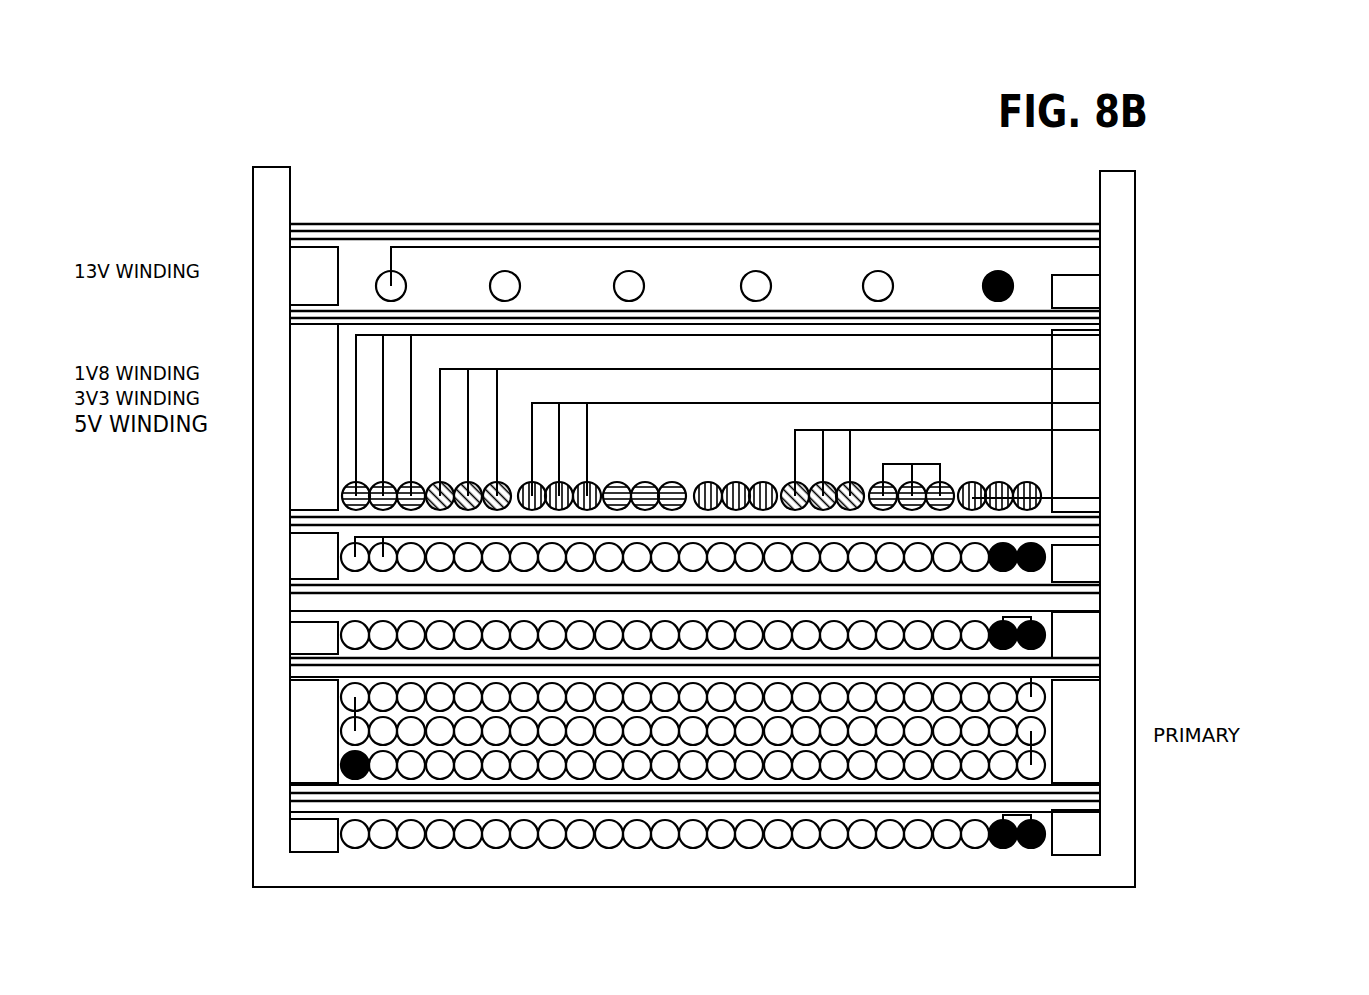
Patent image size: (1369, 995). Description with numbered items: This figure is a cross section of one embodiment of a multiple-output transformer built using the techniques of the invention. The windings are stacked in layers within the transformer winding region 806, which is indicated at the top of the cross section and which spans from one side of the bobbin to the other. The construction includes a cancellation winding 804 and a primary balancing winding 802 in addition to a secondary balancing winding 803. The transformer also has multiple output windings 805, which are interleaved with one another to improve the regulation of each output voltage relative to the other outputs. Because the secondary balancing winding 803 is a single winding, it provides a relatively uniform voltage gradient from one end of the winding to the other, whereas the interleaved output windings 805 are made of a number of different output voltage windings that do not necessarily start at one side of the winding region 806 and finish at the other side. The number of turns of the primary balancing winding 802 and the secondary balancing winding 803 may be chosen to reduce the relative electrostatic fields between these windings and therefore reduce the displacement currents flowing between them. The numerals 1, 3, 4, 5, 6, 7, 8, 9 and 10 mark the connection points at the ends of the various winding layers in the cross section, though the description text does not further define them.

The terminal pin 1 connection 1 is at (383, 634).
The terminal pin 3 connection 3 is at (341, 765).
The terminal pin 4 connection 4 is at (290, 611).
The terminal pin 5 connection 5 is at (290, 812).
The terminal pin 6 connection 6 is at (1100, 369).
The terminal pin 7 connection 7 is at (1100, 335).
The terminal pin 8 connection 8 is at (1100, 403).
The terminal pin 9 connection 9 is at (1100, 247).
The terminal pin 10 connection 10 is at (1013, 288).
The primary balancing winding 802 is at (873, 632).
The secondary balancing winding 803 is at (561, 543).
The cancellation winding 804 is at (873, 821).
The output windings 805 is at (1236, 243).
The transformer winding region 806 is at (649, 178).